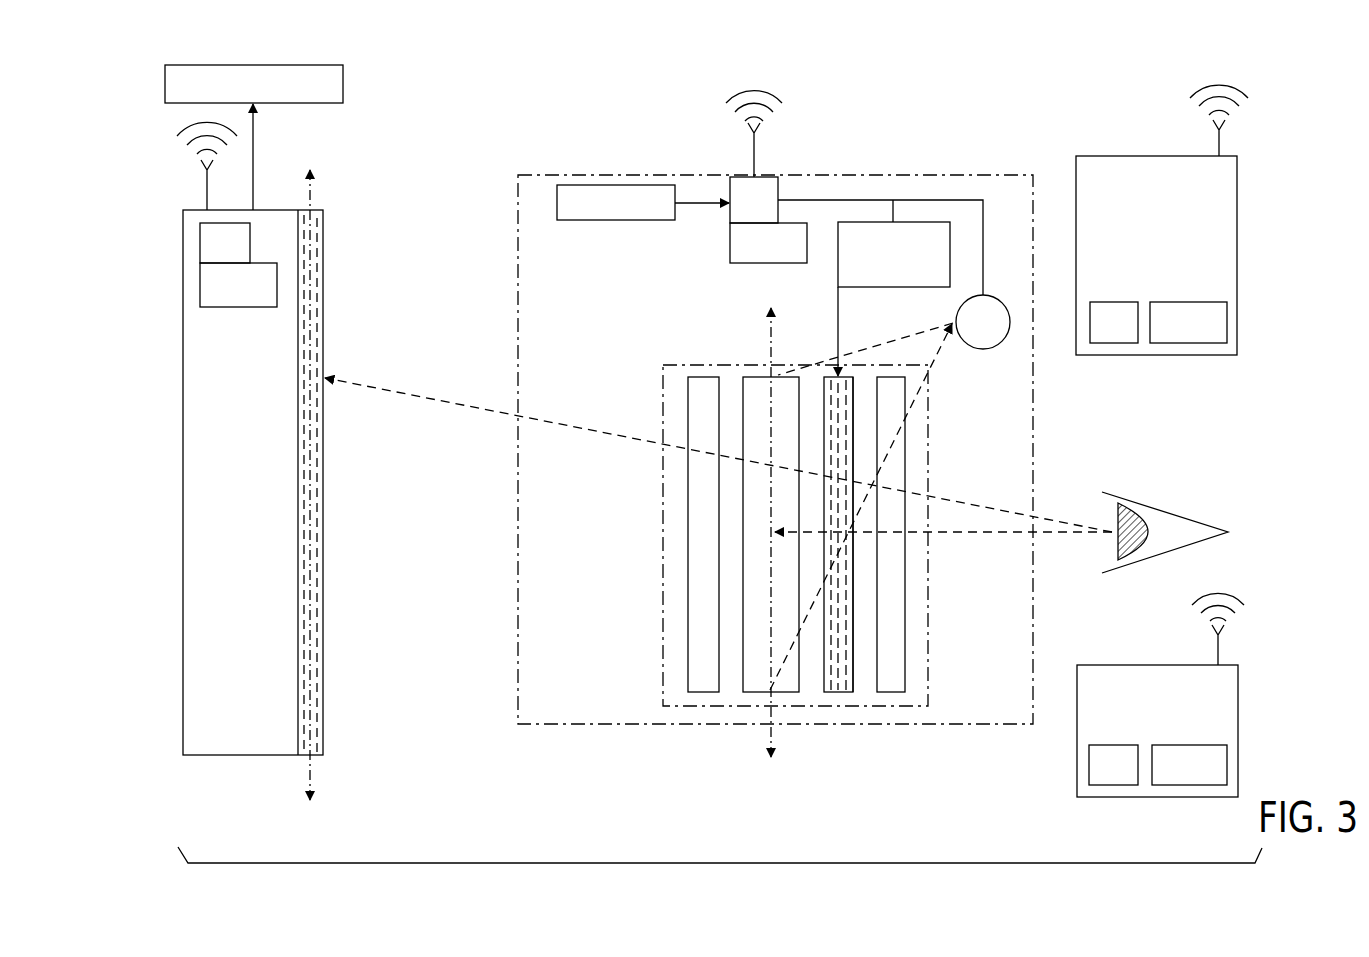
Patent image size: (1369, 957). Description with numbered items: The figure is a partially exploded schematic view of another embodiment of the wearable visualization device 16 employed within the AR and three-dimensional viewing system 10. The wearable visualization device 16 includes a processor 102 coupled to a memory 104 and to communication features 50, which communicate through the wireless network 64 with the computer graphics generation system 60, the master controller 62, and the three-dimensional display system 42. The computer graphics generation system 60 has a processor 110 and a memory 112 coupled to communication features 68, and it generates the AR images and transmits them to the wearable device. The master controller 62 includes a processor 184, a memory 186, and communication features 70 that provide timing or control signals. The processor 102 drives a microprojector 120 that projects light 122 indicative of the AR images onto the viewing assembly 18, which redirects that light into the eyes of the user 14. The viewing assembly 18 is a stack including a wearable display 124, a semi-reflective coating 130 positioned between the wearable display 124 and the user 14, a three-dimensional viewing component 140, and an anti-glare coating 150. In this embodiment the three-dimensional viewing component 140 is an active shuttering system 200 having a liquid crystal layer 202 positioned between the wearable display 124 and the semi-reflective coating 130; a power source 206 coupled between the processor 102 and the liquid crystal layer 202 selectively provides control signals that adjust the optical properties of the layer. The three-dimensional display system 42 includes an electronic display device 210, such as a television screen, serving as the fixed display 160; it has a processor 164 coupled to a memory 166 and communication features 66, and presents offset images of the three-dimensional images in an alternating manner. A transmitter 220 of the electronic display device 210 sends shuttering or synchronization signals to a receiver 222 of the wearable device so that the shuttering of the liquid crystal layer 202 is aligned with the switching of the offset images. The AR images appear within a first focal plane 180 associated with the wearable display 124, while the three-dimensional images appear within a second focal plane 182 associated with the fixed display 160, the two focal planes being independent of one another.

The AR and 3-D viewing system 10 is at (1087, 98).
The user 14 is at (1165, 512).
The wearable visualization device 16 is at (888, 137).
The viewing assembly 18 is at (935, 700).
The 3-D display system 42 is at (264, 432).
The communication features 50 is at (753, 160).
The computer graphics generation system 60 is at (1179, 239).
The master controller 62 is at (1173, 714).
The wireless network 64 is at (1100, 130).
The communication features 66 is at (207, 193).
The communication features 68 is at (1222, 148).
The communication features 70 is at (1218, 658).
The processor 102 is at (778, 190).
The memory 104 is at (768, 263).
The processor 110 is at (1113, 343).
The memory 112 is at (1190, 343).
The microprojector 120 is at (968, 350).
The light 122 is at (940, 352).
The wearable display 124 is at (755, 694).
The semi-reflective coating 130 is at (888, 694).
The 3-D viewing component 140 is at (851, 694).
The anti-glare coating 150 is at (703, 694).
The fixed display 160 is at (340, 327).
The processor 164 is at (200, 243).
The memory 166 is at (200, 287).
The first focal plane 180 is at (773, 347).
The second focal plane 182 is at (312, 772).
The processor 184 is at (1113, 785).
The memory 186 is at (1190, 785).
The active shuttering system 200 is at (946, 222).
The liquid crystal layer 202 is at (835, 694).
The power source 206 is at (903, 288).
The electronic display device 210 is at (152, 316).
The transmitter 220 is at (295, 103).
The receiver 222 is at (617, 220).